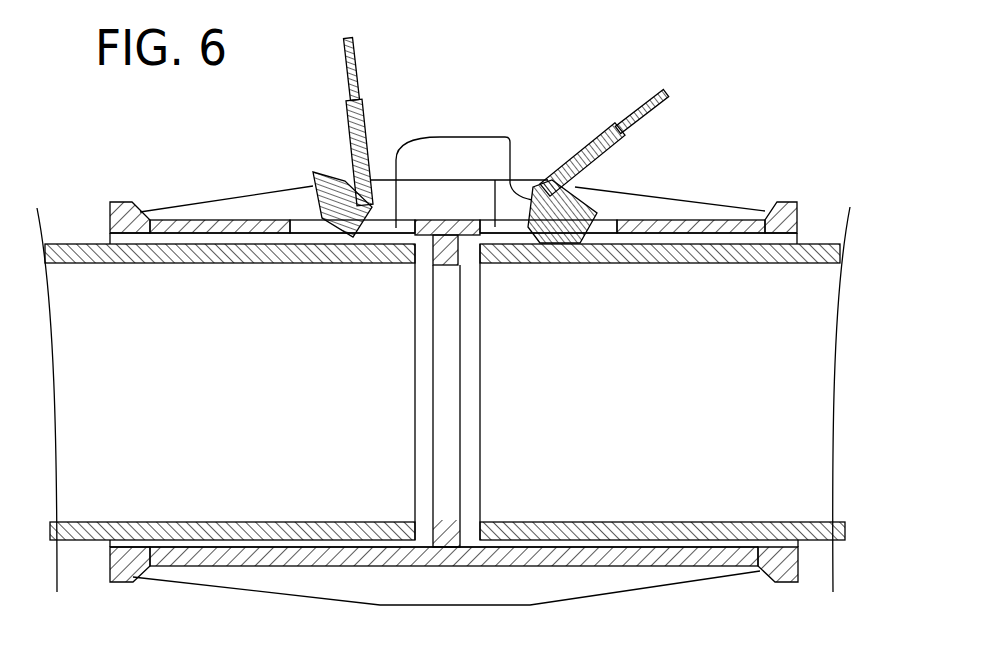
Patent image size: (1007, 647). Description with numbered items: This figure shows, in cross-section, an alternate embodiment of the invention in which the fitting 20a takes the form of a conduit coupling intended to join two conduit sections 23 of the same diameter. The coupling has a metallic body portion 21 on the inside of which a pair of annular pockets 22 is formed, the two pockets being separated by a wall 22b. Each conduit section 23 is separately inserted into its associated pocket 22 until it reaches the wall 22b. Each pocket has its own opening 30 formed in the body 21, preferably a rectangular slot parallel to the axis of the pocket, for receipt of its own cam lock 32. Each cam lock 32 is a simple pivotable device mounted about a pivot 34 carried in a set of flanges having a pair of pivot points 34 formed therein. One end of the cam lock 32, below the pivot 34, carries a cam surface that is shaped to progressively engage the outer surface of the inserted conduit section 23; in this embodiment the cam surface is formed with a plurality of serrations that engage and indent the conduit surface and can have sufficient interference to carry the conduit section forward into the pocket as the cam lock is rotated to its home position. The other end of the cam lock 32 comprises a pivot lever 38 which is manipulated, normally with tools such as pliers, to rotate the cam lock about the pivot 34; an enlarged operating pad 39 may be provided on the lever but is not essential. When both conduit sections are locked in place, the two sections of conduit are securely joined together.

The fitting 20a is at (808, 116).
The body portion 21 is at (210, 220).
The annular pocket 22 is at (423, 535).
The wall 22b is at (462, 373).
The conduit section 23 is at (88, 245).
The opening 30 is at (495, 180).
The cam lock 32 is at (404, 128).
The pivot 34 is at (383, 183).
The pivot lever 38 is at (352, 135).
The operating pad 39 is at (352, 42).